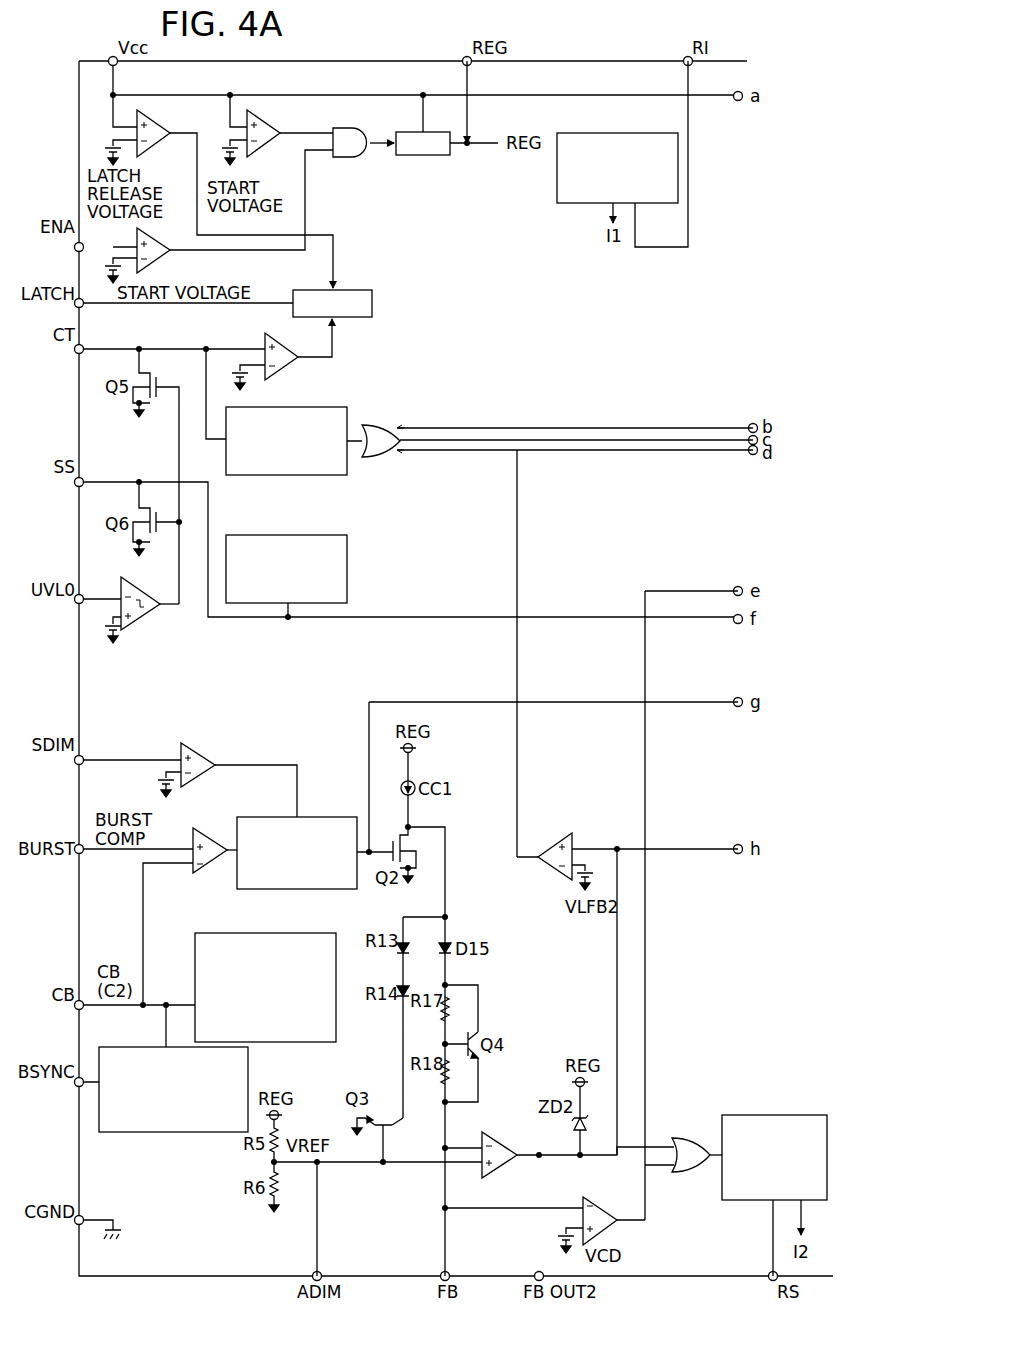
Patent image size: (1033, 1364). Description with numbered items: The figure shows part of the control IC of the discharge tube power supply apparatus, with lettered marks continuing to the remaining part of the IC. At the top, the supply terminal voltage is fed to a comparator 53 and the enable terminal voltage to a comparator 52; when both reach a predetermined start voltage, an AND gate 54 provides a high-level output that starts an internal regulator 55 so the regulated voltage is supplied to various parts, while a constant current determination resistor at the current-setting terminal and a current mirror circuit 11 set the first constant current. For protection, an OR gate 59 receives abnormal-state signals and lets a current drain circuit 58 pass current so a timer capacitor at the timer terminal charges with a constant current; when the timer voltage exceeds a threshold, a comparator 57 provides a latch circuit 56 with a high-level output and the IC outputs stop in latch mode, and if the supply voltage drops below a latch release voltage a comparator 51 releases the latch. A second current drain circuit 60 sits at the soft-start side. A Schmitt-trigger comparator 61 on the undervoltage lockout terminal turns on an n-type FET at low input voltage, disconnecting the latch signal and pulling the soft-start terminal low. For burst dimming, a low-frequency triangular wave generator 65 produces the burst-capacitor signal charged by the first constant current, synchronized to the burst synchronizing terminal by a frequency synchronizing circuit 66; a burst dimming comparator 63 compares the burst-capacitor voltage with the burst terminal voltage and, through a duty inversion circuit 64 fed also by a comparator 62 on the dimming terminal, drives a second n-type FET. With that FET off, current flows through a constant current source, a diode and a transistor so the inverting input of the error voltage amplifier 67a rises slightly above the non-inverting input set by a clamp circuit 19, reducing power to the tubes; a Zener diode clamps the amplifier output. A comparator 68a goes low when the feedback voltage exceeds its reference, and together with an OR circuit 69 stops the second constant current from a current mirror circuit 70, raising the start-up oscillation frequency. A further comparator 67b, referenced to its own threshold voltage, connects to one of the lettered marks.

The current mirror circuit 11 is at (568, 204).
The clamp circuit 19 is at (456, 914).
The comparator 51 is at (160, 122).
The comparator 52 is at (165, 256).
The comparator 53 is at (270, 122).
The AND gate 54 is at (365, 157).
The internal regulator 55 is at (425, 155).
The latch circuit 56 is at (372, 303).
The comparator 57 is at (264, 342).
The current drain circuit 58 is at (330, 407).
The OR gate 59 is at (386, 425).
The current drain circuit 60 is at (290, 535).
The comparator (Schmitt trigger) 61 is at (156, 612).
The comparator 62 is at (208, 748).
The burst dimming comparator 63 is at (205, 830).
The duty inversion circuit 64 is at (315, 817).
The low-frequency triangular wave generator 65 is at (215, 933).
The frequency synchronizing circuit 66 is at (180, 1132).
The error voltage amplifier 67a is at (500, 1133).
The comparator 67b is at (555, 835).
The comparator 68a is at (610, 1177).
The OR circuit 69 is at (688, 1138).
The current mirror circuit 70 is at (795, 1115).